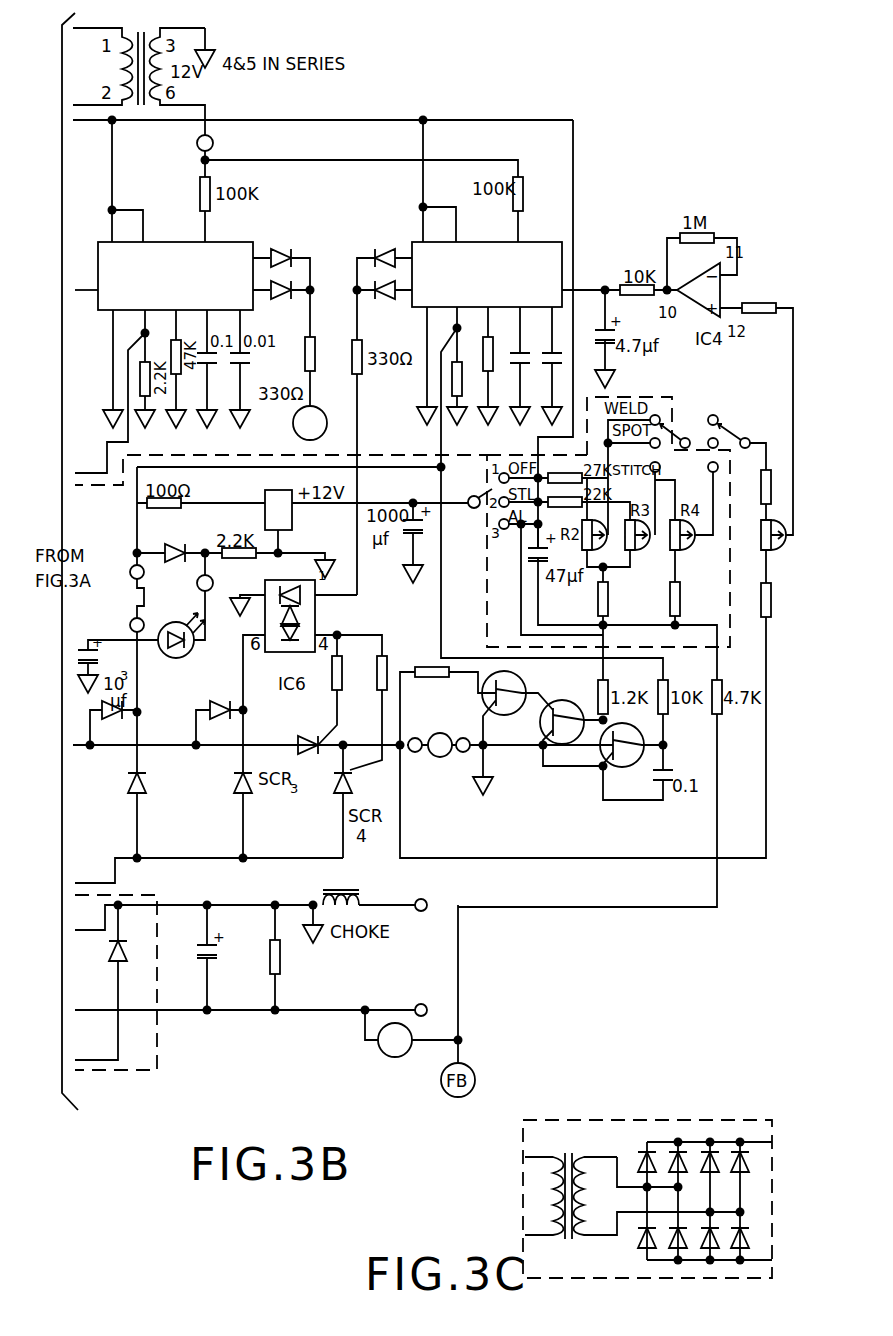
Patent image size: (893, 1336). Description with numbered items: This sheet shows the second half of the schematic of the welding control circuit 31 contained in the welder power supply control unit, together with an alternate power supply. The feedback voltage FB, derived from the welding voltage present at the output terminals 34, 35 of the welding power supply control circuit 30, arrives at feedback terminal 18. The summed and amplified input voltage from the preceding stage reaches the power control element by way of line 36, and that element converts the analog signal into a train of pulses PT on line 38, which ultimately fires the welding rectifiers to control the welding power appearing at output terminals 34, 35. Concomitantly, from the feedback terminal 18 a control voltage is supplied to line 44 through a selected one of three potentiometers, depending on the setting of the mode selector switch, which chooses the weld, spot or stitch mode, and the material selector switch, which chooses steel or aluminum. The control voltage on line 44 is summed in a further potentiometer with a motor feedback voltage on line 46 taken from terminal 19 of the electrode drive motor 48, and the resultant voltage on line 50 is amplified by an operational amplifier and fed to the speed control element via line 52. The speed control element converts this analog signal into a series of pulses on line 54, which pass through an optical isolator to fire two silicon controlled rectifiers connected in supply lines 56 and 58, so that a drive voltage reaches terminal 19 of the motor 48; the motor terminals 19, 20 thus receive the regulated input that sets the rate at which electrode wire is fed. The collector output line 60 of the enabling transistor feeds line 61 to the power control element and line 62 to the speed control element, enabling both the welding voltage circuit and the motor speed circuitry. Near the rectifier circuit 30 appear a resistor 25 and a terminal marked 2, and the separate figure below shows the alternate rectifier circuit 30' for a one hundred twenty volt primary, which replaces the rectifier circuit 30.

In FIG. 3B, the ground terminal of optocoupler IC6 2 is at (247, 592).
In FIG. 3B, the feedback terminal 18 is at (411, 1033).
In FIG. 3B, the terminal of electrode drive motor 19 is at (414, 735).
In FIG. 3B, the motor terminal 20 is at (461, 735).
In FIG. 3B, the resistor 25 is at (292, 957).
In FIG. 3B, the welding power supply control circuit 30 is at (194, 1010).
In FIG. 3C, the alternate rectifier circuit 30' is at (647, 1172).
In FIG. 3B, the welding control circuit 31 is at (613, 190).
In FIG. 3B, the output terminal 34 is at (433, 883).
In FIG. 3B, the output terminal 35 is at (424, 986).
In FIG. 3B, the line 36 is at (98, 271).
In FIG. 3B, the line 38 is at (311, 392).
In FIG. 3B, the line 44 is at (749, 442).
In FIG. 3B, the line 46 is at (766, 678).
In FIG. 3B, the electrode drive motor 48 is at (443, 757).
In FIG. 3B, the line 50 is at (793, 362).
In FIG. 3B, the line 52 is at (583, 291).
In FIG. 3B, the line 54 is at (360, 428).
In FIG. 3B, the supply line 56 is at (158, 752).
In FIG. 3B, the supply line 58 is at (167, 828).
In FIG. 3B, the collector output line 60 is at (93, 121).
In FIG. 3B, the line 61 is at (114, 157).
In FIG. 3B, the line 62 is at (435, 133).